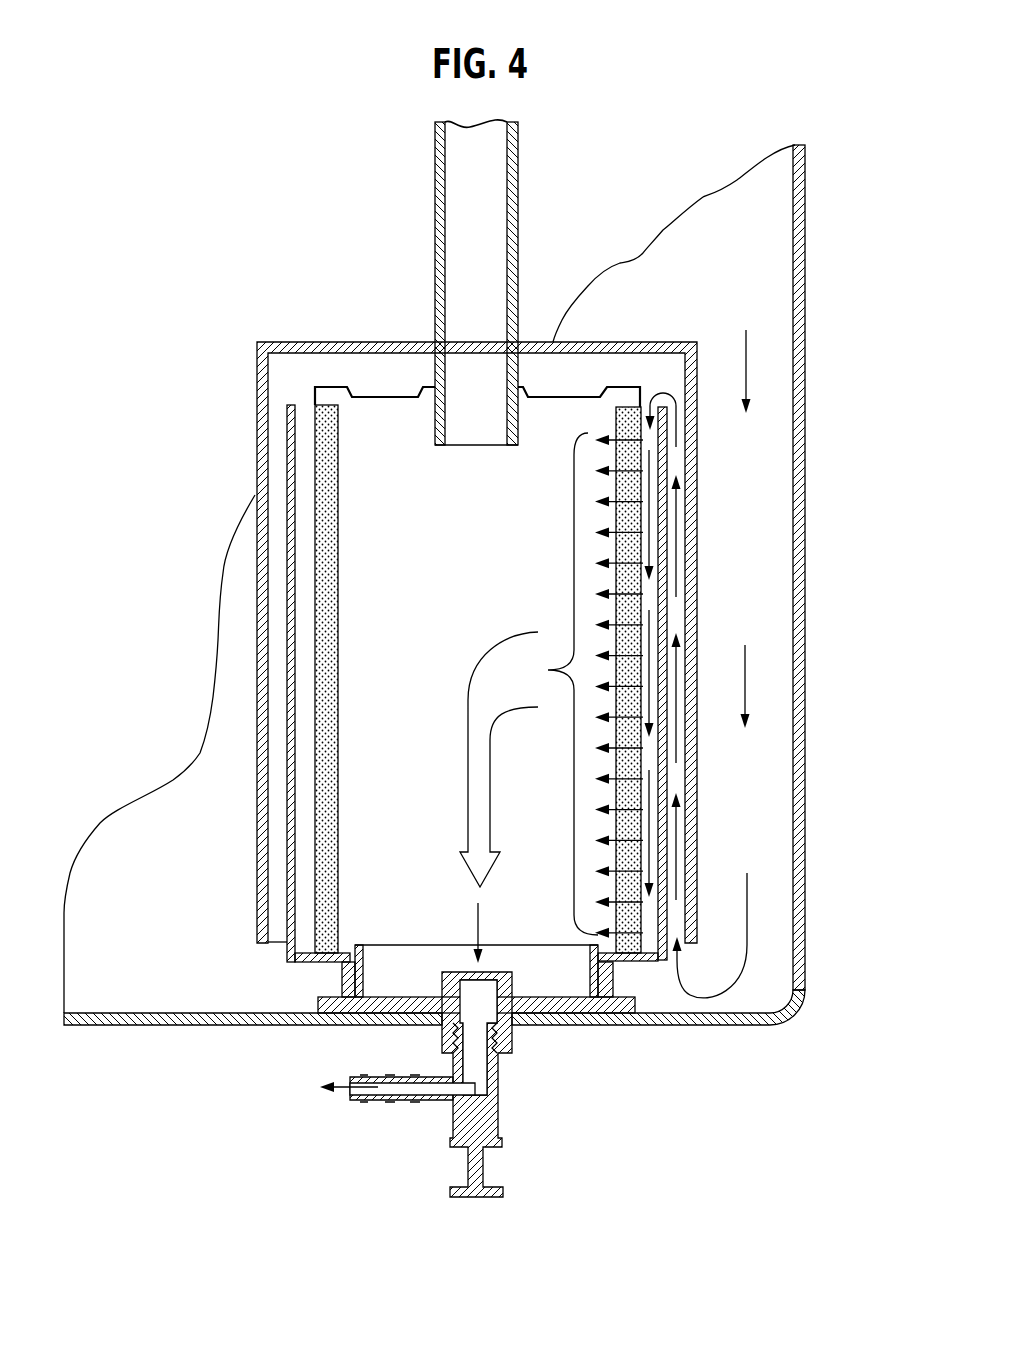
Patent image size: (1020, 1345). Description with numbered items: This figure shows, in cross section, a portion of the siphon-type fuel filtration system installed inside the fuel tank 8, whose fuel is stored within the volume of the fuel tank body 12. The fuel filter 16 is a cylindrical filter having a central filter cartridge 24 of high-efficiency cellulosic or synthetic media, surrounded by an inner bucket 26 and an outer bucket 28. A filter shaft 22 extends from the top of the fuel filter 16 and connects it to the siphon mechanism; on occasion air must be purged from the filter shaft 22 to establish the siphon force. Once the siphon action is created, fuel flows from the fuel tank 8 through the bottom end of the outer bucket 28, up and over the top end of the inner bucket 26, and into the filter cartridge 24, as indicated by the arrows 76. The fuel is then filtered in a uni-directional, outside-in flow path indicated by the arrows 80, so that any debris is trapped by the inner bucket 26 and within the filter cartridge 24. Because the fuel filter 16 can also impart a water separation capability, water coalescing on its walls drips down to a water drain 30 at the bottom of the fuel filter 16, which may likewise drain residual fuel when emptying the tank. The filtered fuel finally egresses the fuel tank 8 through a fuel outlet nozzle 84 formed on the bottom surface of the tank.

The fuel tank 8 is at (477, 585).
The fuel tank body 12 is at (804, 722).
The fuel filter 16 is at (424, 677).
The filter shaft 22 is at (437, 232).
The filter cartridge 24 is at (466, 536).
The inner bucket 26 is at (288, 472).
The outer bucket 28 is at (257, 567).
The water drain 30 is at (466, 1084).
The arrows 76 is at (676, 427).
The arrows 80 is at (466, 775).
The fuel outlet nozzle 84 is at (368, 1100).